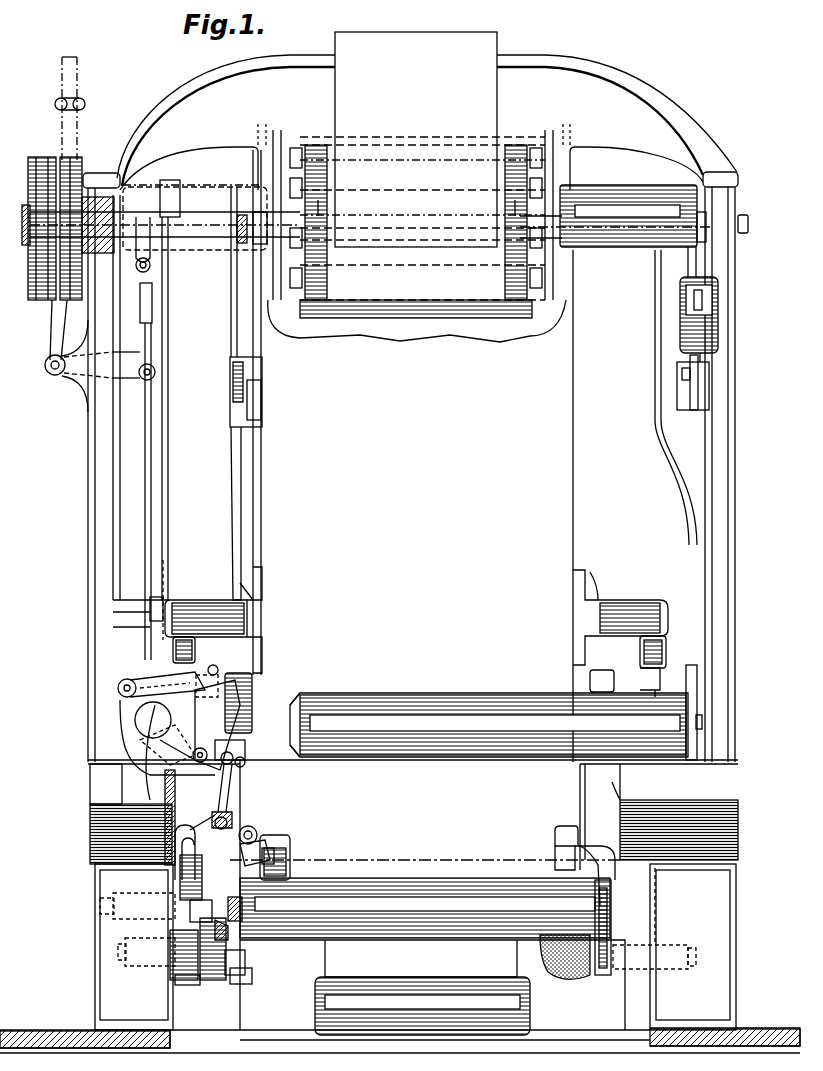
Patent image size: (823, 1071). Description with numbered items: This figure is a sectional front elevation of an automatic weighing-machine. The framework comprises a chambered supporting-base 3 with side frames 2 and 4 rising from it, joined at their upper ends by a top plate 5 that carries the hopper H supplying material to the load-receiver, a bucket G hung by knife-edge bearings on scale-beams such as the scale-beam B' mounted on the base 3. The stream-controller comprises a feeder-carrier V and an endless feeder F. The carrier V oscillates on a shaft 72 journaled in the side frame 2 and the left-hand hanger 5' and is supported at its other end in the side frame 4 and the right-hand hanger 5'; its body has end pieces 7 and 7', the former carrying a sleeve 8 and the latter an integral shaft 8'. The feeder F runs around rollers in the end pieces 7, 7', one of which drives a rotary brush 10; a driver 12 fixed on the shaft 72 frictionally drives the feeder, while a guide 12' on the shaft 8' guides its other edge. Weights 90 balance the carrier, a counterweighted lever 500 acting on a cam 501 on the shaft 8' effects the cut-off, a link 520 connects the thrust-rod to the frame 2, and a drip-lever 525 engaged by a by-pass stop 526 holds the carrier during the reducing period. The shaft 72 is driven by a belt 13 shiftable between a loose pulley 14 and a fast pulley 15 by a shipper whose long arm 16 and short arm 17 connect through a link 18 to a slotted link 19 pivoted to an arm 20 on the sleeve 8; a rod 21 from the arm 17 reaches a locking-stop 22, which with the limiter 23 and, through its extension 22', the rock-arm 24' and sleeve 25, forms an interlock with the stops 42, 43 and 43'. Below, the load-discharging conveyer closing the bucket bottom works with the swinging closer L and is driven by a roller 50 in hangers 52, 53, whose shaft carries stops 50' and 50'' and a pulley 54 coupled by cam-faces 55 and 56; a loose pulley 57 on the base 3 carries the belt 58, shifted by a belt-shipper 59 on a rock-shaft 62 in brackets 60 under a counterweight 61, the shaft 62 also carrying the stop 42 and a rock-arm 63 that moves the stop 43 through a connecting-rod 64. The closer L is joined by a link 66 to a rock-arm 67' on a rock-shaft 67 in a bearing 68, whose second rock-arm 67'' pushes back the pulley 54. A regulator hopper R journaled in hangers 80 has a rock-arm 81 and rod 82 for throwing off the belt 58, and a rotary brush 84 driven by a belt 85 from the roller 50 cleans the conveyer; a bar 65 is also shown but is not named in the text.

The side frame 2 is at (92, 497).
The chambered supporting-base 3 is at (693, 947).
The side frame 4 is at (720, 565).
The cross-beam or top plate 5 is at (427, 110).
The hanger 5' is at (411, 187).
The end piece 7 is at (320, 222).
The end piece 7' is at (506, 222).
The sleeve 8 is at (165, 240).
The shaft 8' is at (615, 243).
The scraper or rotary brush 10 is at (282, 285).
The driver 12 is at (344, 210).
The guide 12' is at (485, 210).
The driving-belt 13 is at (62, 82).
The loose pulley 14 is at (38, 162).
The fast pulley 15 is at (72, 165).
The long arm of angle-lever 16 is at (52, 302).
The short arm of angle-lever 17 is at (124, 366).
The link 18 is at (149, 336).
The slotted link 19 is at (149, 283).
The arm 20 is at (150, 238).
The rod 21 is at (152, 454).
The locking-stop 22 is at (161, 672).
The extension of stop 22' is at (209, 670).
The load-discharging-movement limiter 23 is at (232, 322).
The rock-arm 24' is at (248, 648).
The sleeve 25 is at (246, 673).
The load-supplying-movement limiter 42 is at (222, 712).
The load-supplying-movement limiter 43 is at (226, 392).
The load-supplying-movement limiter 43' is at (272, 400).
The roller 50 is at (425, 891).
The stop 50' is at (257, 907).
The stop 50'' is at (171, 877).
The bracket or hanger 52 is at (286, 870).
The bracket or hanger 53 is at (598, 876).
The pulley 54 is at (214, 972).
The cam-face 55 is at (190, 912).
The cam-face 56 is at (226, 930).
The loose pulley 57 is at (178, 966).
The driving-belt 58 is at (187, 980).
The belt-shipper 59 is at (198, 832).
The brackets 60 is at (195, 768).
The counterweight 61 is at (153, 720).
The rock-shaft 62 is at (193, 755).
The rock-arm 63 is at (246, 753).
The connecting-rod 64 is at (233, 487).
The bar 65 is at (262, 497).
The link 66 is at (232, 786).
The rock-shaft 67 is at (275, 824).
The rock-arm 67' is at (257, 808).
The second rock-arm 67'' is at (292, 851).
The bearing 68 is at (265, 852).
The shaft 72 is at (100, 175).
The hangers 80 is at (140, 940).
The rock-arm 81 is at (240, 984).
The rod 82 is at (245, 960).
The scraper or rotary brush 84 is at (572, 977).
The belt 85 is at (612, 925).
The weights 90 is at (628, 192).
The counterweighted lever 500 is at (690, 365).
The cam 501 is at (690, 263).
The link 520 is at (162, 603).
The drip-lever 525 is at (668, 472).
The by-pass stop 526 is at (697, 680).
The hopper H is at (416, 139).
The feeder or endless conveyer F is at (417, 239).
The bucket G is at (420, 520).
The feeder-carrier V is at (553, 215).
The scale-beam B' is at (489, 713).
The closer L is at (602, 812).
The regulator or hopper R is at (433, 1006).